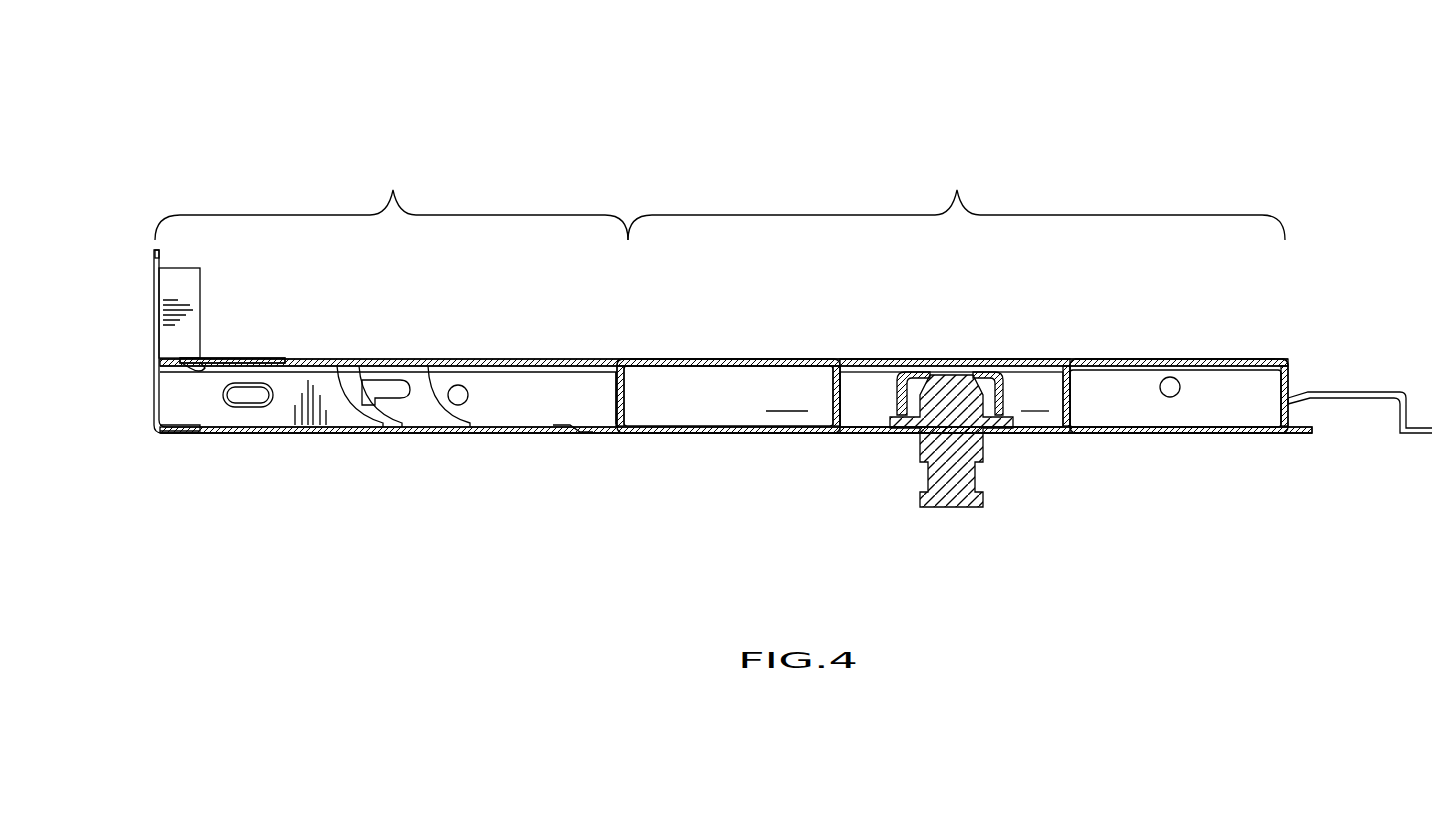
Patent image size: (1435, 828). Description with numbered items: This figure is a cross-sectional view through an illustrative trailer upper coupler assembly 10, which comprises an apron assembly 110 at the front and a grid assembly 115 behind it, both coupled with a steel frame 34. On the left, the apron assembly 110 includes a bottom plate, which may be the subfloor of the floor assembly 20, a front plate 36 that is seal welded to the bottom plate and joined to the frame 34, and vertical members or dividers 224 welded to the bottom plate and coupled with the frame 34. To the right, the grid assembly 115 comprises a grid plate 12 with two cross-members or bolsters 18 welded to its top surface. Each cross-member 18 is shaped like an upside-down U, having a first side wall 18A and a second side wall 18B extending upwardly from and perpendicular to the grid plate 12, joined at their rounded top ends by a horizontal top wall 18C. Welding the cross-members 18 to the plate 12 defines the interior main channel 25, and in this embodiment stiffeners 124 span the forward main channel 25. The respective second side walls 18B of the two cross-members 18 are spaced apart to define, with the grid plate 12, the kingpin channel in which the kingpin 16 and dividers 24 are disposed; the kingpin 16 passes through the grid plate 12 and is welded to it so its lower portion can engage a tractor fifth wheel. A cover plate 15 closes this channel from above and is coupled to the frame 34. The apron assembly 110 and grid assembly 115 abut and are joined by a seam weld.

The upper coupler assembly 10 is at (198, 192).
The apron assembly 110 is at (395, 178).
The grid assembly 115 is at (960, 176).
The front plate 36 is at (158, 303).
The frame 34 is at (170, 395).
The vertical members 224 is at (385, 360).
The stiffeners 124 is at (728, 396).
The dividers 24 is at (955, 396).
The main channel 25 is at (1155, 380).
The cross-member 18 is at (665, 358).
The first side wall 18A is at (614, 412).
The second side wall 18B is at (843, 397).
The top wall 18C is at (731, 358).
The cover plate 15 is at (856, 358).
The kingpin 16 is at (955, 375).
The floor assembly 20 is at (507, 435).
The grid plate 12 is at (1212, 435).